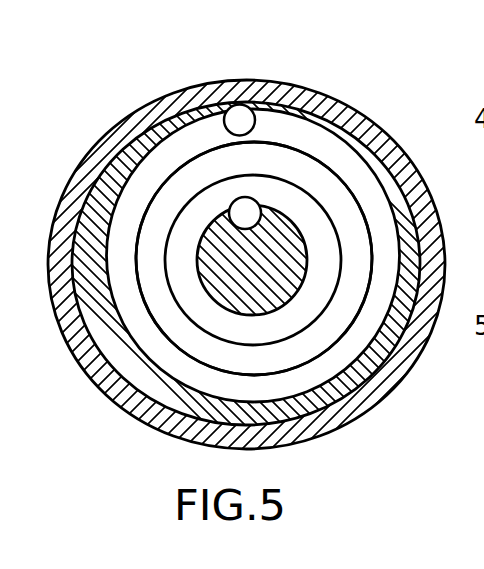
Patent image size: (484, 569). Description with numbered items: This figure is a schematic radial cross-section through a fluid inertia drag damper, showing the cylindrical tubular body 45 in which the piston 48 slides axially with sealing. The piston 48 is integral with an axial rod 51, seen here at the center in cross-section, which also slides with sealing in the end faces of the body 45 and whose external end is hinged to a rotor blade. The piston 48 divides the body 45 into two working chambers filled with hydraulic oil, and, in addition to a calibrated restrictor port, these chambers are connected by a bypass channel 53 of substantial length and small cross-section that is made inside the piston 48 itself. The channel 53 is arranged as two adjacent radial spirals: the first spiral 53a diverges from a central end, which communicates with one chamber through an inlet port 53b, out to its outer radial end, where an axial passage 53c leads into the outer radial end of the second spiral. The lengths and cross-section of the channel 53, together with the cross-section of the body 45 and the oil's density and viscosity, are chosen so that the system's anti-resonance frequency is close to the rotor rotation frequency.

The cylindrical tubular body 45 is at (138, 118).
The piston 48 is at (188, 125).
The axial rod 51 is at (242, 284).
The bypass channel 53 is at (160, 350).
The first spiral 53a is at (177, 370).
The inlet port 53b is at (232, 214).
The axial passage 53c is at (250, 108).